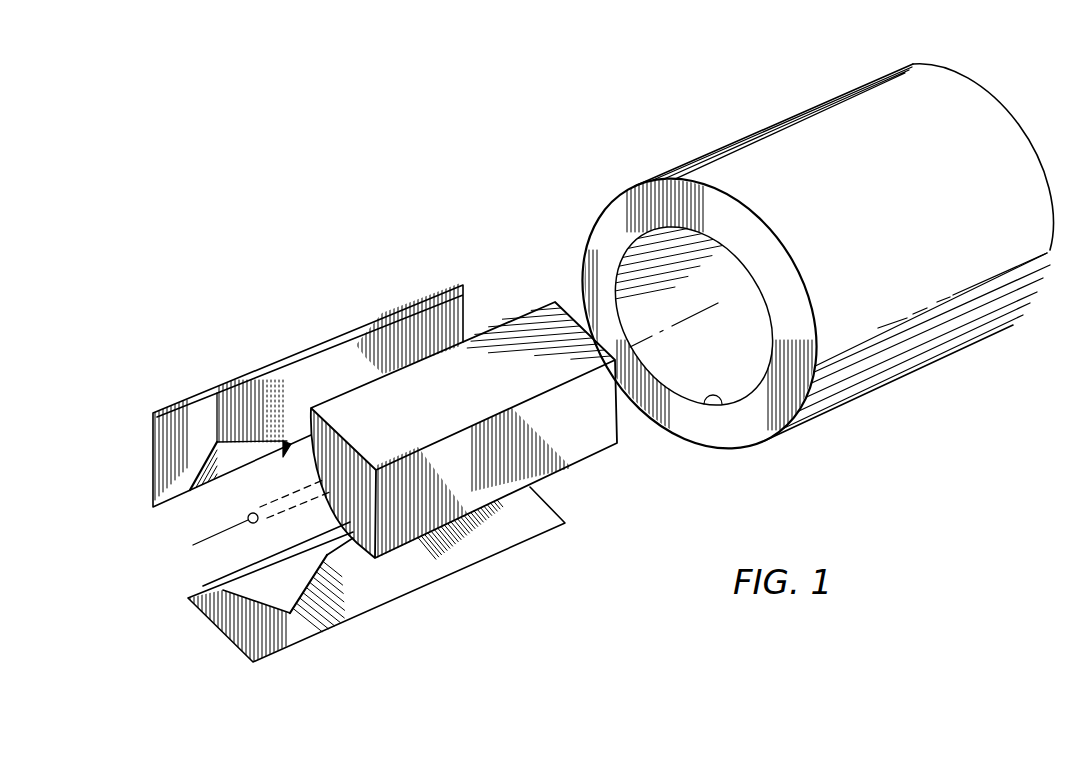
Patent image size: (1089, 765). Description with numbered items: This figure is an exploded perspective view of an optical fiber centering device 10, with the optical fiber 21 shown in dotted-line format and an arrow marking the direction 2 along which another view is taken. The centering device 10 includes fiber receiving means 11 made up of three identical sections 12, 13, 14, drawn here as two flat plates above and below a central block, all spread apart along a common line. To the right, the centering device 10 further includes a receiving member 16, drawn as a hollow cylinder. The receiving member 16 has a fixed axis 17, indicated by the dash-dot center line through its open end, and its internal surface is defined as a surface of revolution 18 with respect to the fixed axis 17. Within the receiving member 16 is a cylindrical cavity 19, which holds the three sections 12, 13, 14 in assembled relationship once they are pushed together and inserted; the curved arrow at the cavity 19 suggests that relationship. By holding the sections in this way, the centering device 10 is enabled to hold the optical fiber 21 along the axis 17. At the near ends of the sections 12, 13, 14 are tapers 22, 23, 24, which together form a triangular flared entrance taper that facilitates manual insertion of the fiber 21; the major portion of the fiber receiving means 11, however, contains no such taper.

The direction -2- 2 is at (186, 550).
The optical fiber centering device 10 is at (527, 250).
The fiber receiving means 11 is at (381, 470).
The section 12 is at (302, 352).
The section 13 is at (612, 449).
The section 14 is at (428, 576).
The receiving member 16 is at (687, 151).
The fixed axis 17 is at (686, 318).
The surface of revolution 18 is at (703, 405).
The cylindrical cavity 19 is at (736, 307).
The optical fiber 21 is at (258, 527).
The taper 22 is at (238, 463).
The taper 23 is at (335, 508).
The taper 24 is at (312, 565).